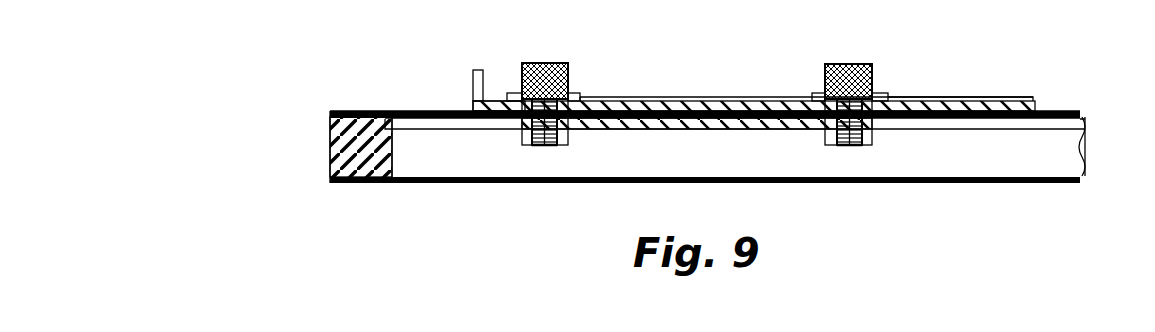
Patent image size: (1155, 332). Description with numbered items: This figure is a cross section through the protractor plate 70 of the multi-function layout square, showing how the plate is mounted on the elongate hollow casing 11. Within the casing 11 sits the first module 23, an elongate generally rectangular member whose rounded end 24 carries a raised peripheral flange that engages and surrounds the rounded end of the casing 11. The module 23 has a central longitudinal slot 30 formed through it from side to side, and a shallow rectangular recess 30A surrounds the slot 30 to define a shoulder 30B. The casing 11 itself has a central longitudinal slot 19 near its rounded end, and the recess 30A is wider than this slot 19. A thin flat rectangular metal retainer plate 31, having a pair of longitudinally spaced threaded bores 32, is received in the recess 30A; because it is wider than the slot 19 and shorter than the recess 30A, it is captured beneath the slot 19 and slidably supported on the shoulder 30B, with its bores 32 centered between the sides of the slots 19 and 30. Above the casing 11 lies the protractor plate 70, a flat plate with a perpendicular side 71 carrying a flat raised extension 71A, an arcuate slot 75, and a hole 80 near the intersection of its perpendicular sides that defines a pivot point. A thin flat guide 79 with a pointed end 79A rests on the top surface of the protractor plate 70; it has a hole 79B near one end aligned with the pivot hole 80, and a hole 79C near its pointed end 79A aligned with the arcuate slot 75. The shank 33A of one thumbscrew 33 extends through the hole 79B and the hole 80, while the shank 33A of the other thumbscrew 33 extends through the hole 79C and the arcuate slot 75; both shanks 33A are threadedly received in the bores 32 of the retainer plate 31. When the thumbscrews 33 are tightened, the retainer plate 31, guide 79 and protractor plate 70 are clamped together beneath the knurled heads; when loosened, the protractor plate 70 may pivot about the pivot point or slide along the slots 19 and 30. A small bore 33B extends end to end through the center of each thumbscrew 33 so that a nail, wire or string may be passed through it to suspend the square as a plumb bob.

The outer housing or casing 11 is at (360, 100).
The central longitudinal slot 19 is at (405, 110).
The first module 23 is at (1024, 147).
The rounded end 24 is at (330, 127).
The central longitudinal slot 30 is at (948, 160).
The shallow rectangular recess 30A is at (411, 128).
The shoulder 30B is at (493, 128).
The retainer plate 31 is at (735, 128).
The threaded bore 32 is at (563, 132).
The thumbscrew 33 is at (567, 72).
The shank 33A is at (561, 148).
The small bore 33B is at (560, 60).
The protractor plate 70 is at (958, 92).
The perpendicular side 71 is at (472, 103).
The flat raised extension 71A is at (473, 89).
The arcuate slot 75 is at (884, 102).
The thin flat guide 79 is at (710, 98).
The pointed end 79A is at (880, 98).
The hole 79B is at (519, 96).
The hole 79C is at (826, 97).
The hole 80 is at (571, 100).